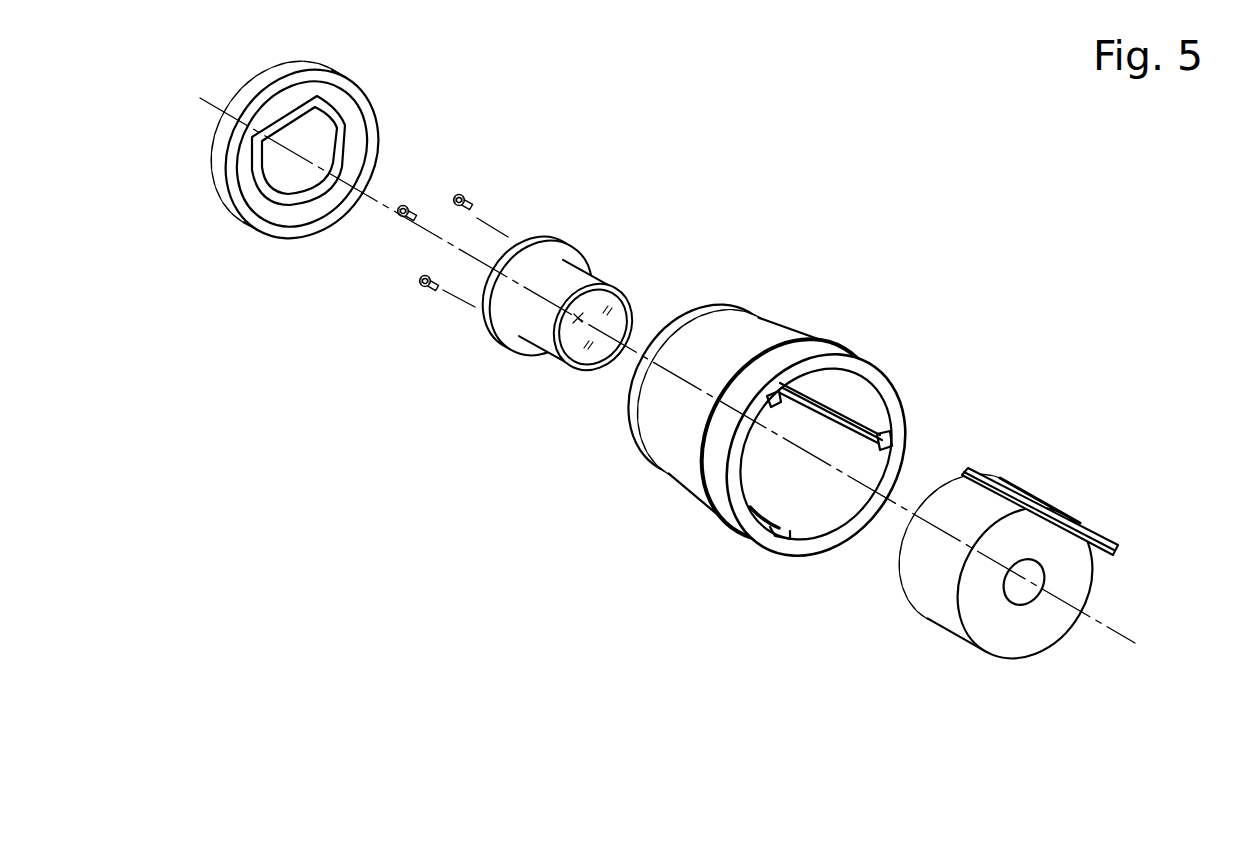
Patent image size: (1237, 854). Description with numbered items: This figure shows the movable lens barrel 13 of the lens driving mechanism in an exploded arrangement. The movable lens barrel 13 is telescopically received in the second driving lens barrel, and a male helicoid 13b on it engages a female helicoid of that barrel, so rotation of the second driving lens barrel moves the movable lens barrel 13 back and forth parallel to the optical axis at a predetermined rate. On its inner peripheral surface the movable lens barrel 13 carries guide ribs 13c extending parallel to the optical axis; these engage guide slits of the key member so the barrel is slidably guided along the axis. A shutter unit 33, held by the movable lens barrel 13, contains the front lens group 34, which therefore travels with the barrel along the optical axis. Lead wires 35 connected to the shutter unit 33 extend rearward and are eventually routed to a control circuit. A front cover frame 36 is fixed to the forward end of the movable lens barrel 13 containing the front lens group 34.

The movable lens barrel 13 is at (805, 408).
The male helicoid 13b is at (822, 345).
The guide ribs 13c is at (774, 393).
The shutter unit 33 is at (1030, 635).
The front lens group 34 is at (542, 342).
The lead wires 35 is at (1097, 537).
The front cover frame 36 is at (310, 222).